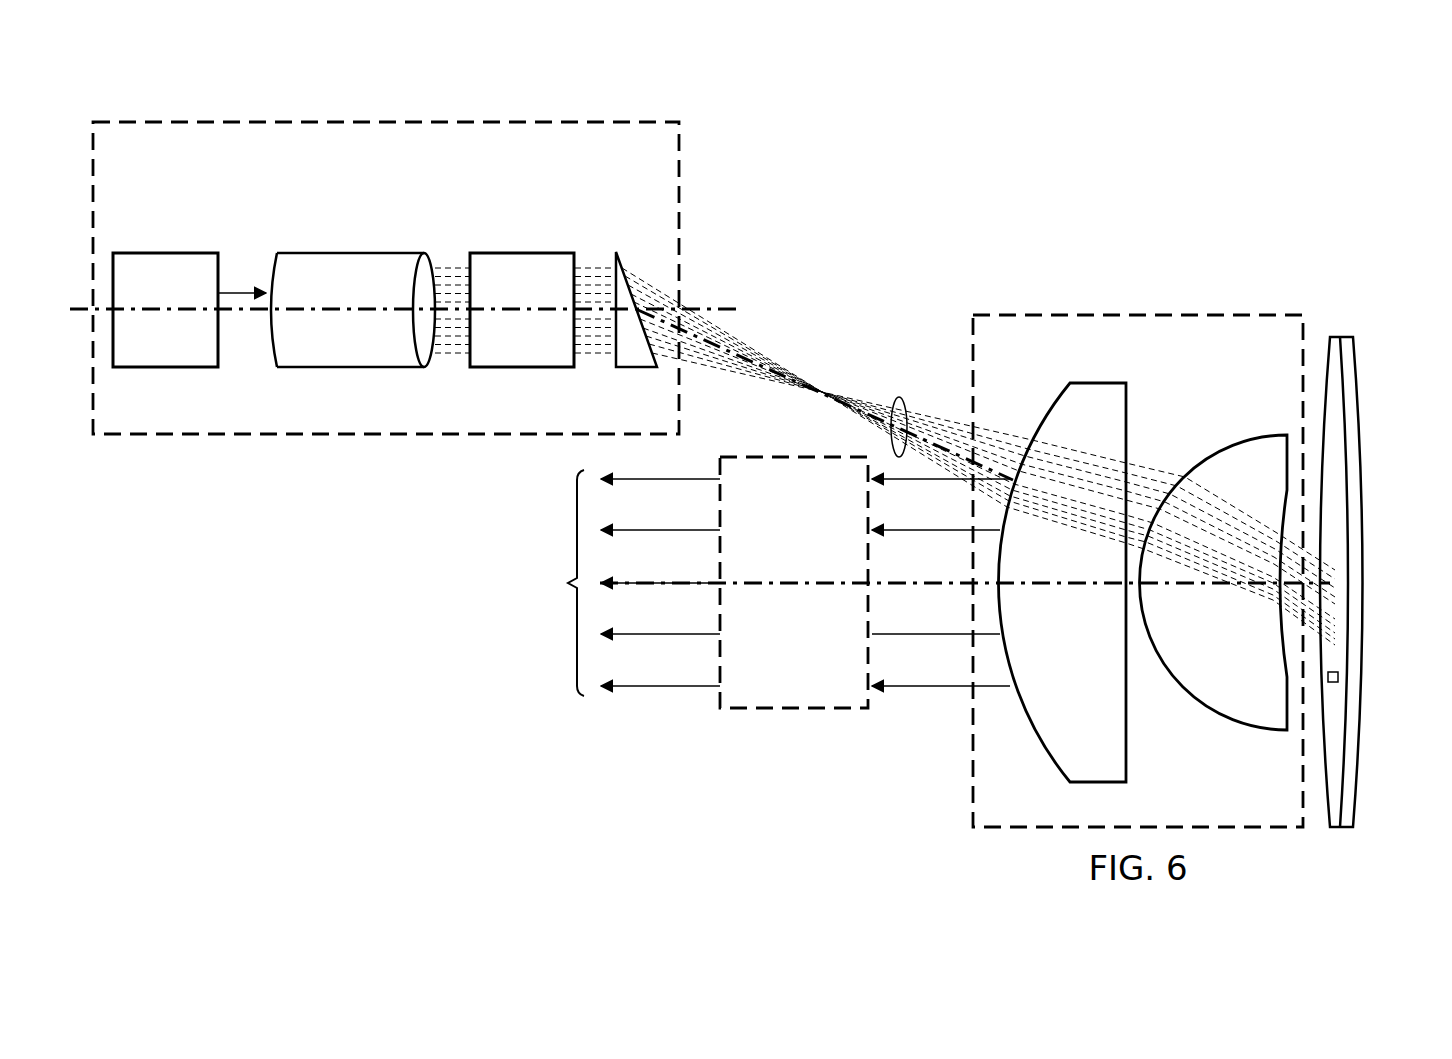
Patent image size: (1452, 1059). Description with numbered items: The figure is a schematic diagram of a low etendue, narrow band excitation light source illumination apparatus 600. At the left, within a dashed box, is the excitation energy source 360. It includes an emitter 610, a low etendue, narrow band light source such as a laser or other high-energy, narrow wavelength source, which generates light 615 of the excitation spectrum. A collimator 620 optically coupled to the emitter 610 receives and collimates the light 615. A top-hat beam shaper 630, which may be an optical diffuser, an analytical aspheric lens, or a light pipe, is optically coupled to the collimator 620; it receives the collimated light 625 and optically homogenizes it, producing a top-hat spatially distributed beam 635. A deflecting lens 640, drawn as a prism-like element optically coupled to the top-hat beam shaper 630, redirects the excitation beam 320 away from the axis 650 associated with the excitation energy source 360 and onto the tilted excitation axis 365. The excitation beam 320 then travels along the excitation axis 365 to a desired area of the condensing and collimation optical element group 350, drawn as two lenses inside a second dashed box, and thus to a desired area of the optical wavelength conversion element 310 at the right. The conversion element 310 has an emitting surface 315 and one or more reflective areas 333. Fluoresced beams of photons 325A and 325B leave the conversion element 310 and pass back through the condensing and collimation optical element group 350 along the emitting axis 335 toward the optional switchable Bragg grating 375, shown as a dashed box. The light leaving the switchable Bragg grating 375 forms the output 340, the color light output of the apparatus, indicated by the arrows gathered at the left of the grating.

The illumination apparatus 600 is at (1063, 131).
The excitation energy source 360 is at (372, 118).
The emitter 610 is at (168, 367).
The light 615 is at (243, 285).
The collimator 620 is at (345, 367).
The collimated light 625 is at (455, 352).
The top-hat beam shaper 630 is at (518, 253).
The top-hat spatially distributed beam 635 is at (600, 352).
The deflecting lens 640 is at (616, 251).
The axis 650 is at (725, 308).
The excitation axis 365 is at (830, 392).
The excitation beam 320 is at (900, 398).
The condensing and collimation optical element group 350 is at (1151, 311).
The fluoresced beam of photons 325A is at (905, 481).
The fluoresced beam of photons 325B is at (905, 532).
The emitting axis 335 is at (772, 587).
The switchable Bragg grating 375 is at (806, 710).
The output 340 is at (580, 583).
The optical wavelength conversion element 310 is at (1357, 583).
The emitting surface 315 is at (1335, 788).
The reflective area 333 is at (1336, 683).